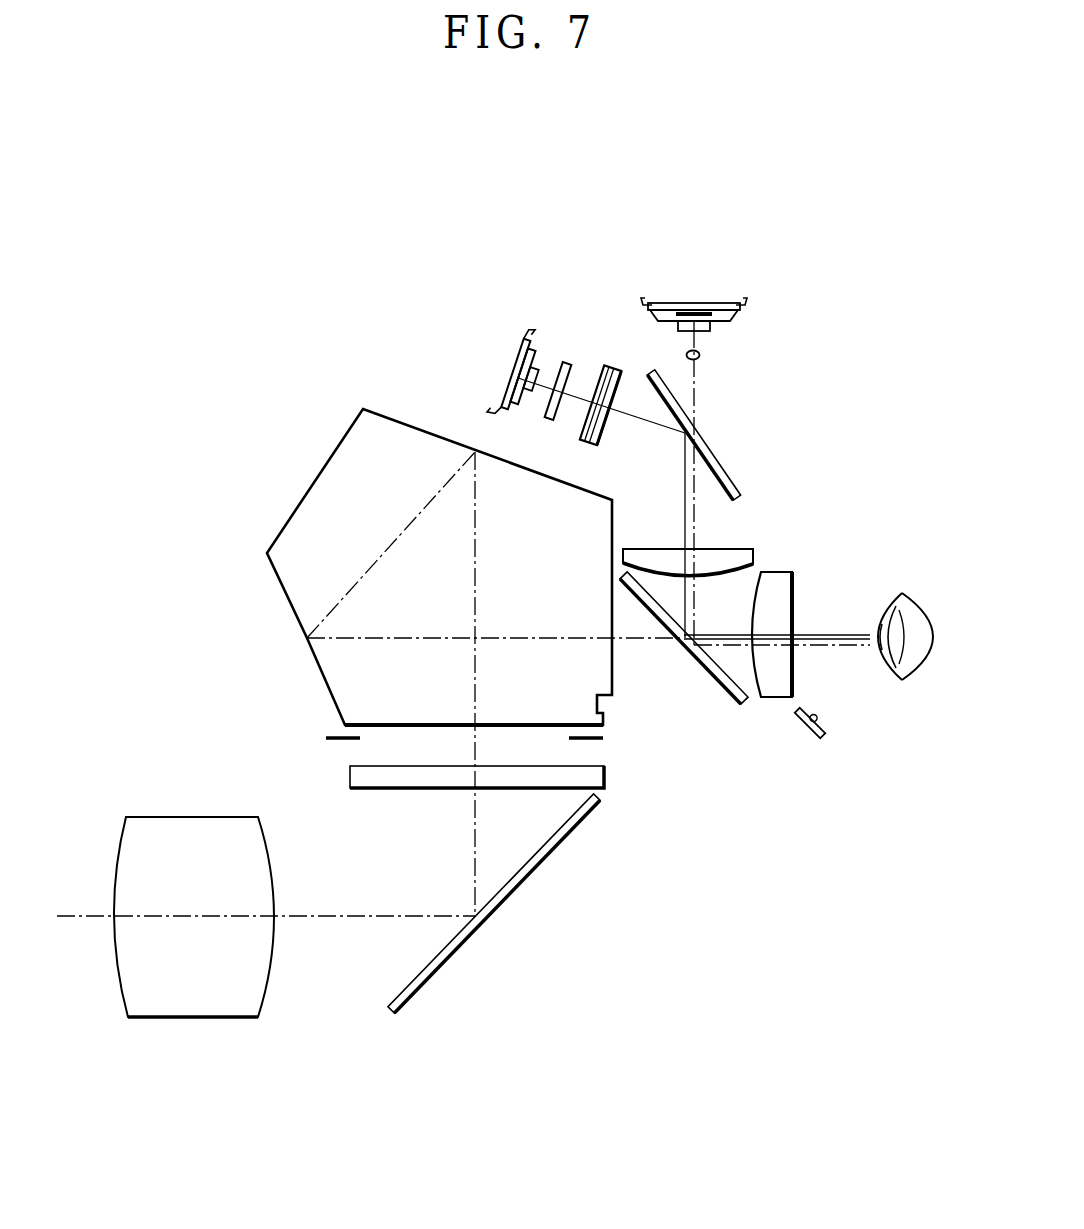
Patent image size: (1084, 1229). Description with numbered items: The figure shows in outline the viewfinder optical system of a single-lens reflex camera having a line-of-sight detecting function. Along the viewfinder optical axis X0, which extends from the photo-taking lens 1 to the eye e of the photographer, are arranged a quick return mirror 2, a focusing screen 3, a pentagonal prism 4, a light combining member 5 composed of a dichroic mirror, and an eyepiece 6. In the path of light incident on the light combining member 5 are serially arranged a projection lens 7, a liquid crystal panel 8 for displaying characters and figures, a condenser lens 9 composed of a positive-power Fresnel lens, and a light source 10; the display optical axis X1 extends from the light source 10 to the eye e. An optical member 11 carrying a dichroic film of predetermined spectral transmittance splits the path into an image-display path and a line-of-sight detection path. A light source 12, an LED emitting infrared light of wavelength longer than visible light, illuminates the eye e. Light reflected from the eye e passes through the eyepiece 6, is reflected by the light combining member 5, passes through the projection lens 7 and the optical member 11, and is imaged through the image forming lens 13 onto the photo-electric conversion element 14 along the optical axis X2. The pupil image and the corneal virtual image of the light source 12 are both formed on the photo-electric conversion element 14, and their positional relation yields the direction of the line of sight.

The photo-taking lens 1 is at (210, 1010).
The quick return mirror 2 is at (432, 977).
The focusing screen 3 is at (350, 774).
The pentagonal prism 4 is at (300, 603).
The light combining member 5 is at (718, 680).
The eyepiece 6 is at (773, 698).
The projection lens 7 is at (735, 547).
The liquid crystal panel 8 is at (612, 362).
The condenser lens 9 is at (567, 362).
The light source 10 is at (515, 378).
The optical member 11 is at (728, 478).
The light source 12 is at (822, 735).
The image forming lens 13 is at (700, 355).
The photo-electric conversion element 14 is at (716, 302).
The eye of the photographer e is at (900, 680).
The viewfinder optical axis X0 is at (74, 919).
The display optical axis X1 is at (685, 468).
The optical axis X2 is at (697, 392).